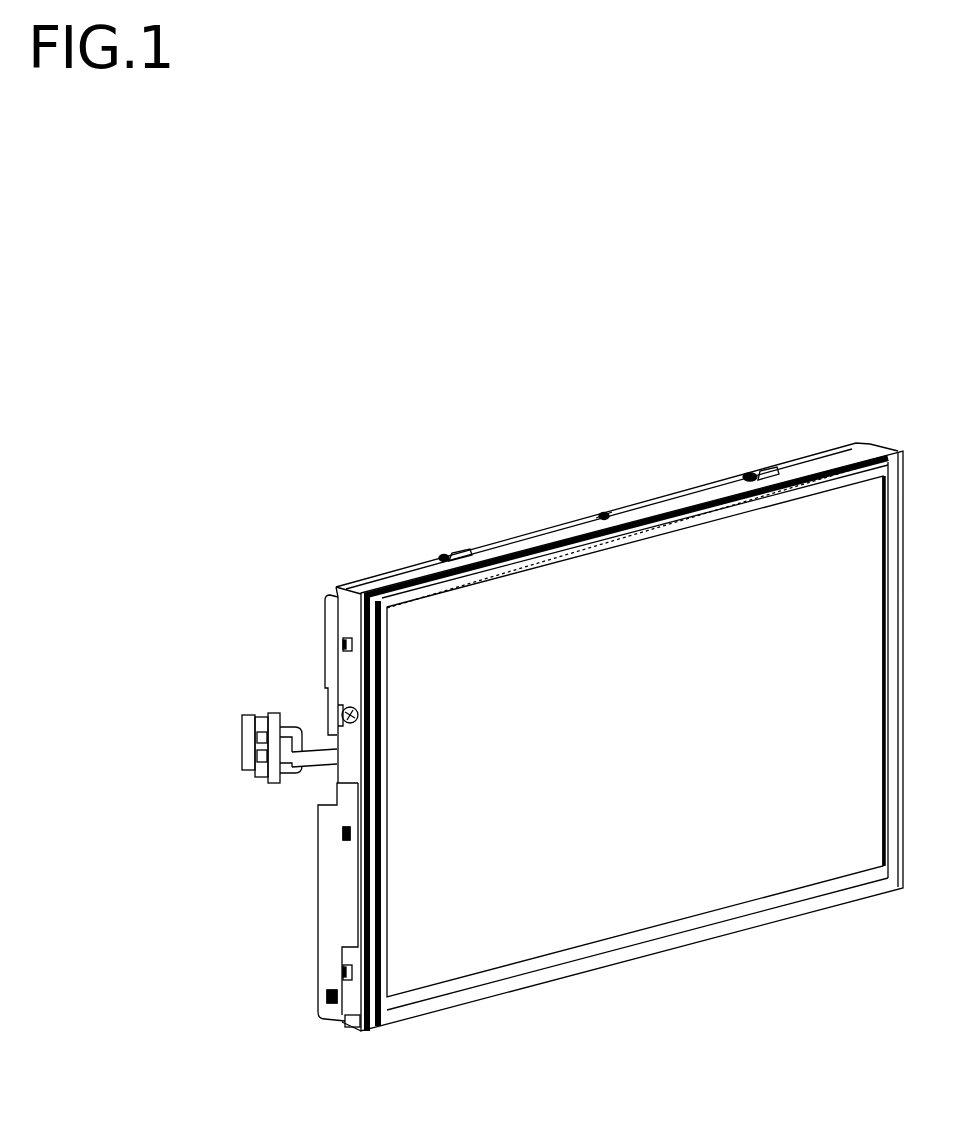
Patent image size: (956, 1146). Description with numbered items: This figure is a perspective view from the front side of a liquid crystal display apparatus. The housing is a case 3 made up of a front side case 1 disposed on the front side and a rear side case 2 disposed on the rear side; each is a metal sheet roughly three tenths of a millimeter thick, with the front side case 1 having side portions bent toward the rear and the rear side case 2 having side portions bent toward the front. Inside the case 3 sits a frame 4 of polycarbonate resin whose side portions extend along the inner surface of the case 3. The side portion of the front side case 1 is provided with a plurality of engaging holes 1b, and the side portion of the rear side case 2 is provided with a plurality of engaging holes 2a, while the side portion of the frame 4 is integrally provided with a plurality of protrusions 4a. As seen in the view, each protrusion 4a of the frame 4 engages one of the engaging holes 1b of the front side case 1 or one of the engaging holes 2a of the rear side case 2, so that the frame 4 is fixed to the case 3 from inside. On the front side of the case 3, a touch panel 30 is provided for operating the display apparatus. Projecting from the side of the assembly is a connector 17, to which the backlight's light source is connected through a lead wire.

The front side case 1 is at (412, 580).
The engaging holes 1b is at (598, 514).
The rear side case 2 is at (374, 578).
The engaging holes 2a is at (450, 557).
The case 3 is at (360, 502).
The frame 4 is at (347, 1032).
The protrusions 4a is at (445, 557).
The connector 17 is at (242, 733).
The touch panel 30 is at (476, 955).